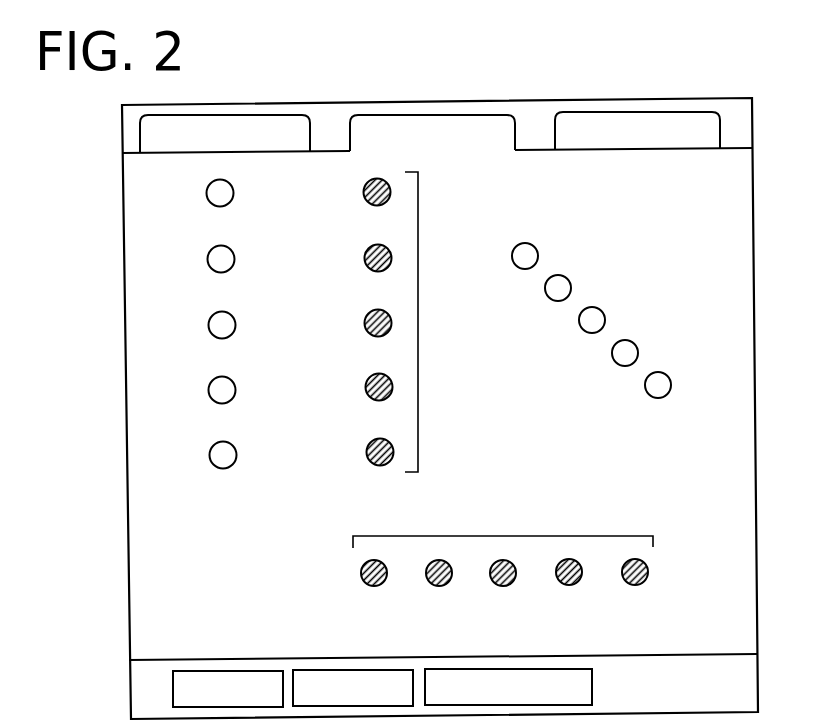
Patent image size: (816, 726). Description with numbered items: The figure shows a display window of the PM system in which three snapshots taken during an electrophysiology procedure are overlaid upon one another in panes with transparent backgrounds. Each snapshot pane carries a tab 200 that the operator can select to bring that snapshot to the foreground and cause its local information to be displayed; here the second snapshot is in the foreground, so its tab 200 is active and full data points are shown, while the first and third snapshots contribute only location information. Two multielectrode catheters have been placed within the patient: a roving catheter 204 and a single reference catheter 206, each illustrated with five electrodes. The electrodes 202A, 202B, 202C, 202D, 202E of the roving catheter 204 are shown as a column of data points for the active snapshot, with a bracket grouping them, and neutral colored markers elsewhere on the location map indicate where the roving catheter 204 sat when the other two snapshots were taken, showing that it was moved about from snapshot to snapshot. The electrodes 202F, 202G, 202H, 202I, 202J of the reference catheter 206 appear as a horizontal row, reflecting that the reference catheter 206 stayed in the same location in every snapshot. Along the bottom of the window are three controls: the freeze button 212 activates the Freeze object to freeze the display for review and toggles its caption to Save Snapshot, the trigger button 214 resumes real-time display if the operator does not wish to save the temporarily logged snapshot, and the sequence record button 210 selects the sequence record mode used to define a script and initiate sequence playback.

The tab 200 is at (276, 116).
The electrode 202A is at (363, 192).
The electrode 202B is at (364, 258).
The electrode 202C is at (364, 323).
The electrode 202D is at (365, 387).
The electrode 202E is at (366, 452).
The electrode 202F is at (361, 573).
The electrode 202G is at (436, 587).
The electrode 202H is at (502, 587).
The electrode 202I is at (568, 586).
The electrode 202J is at (638, 586).
The roving catheter 204 is at (418, 323).
The reference catheter 206 is at (503, 535).
The sequence record button 210 is at (592, 697).
The freeze button 212 is at (218, 671).
The trigger button 214 is at (300, 670).